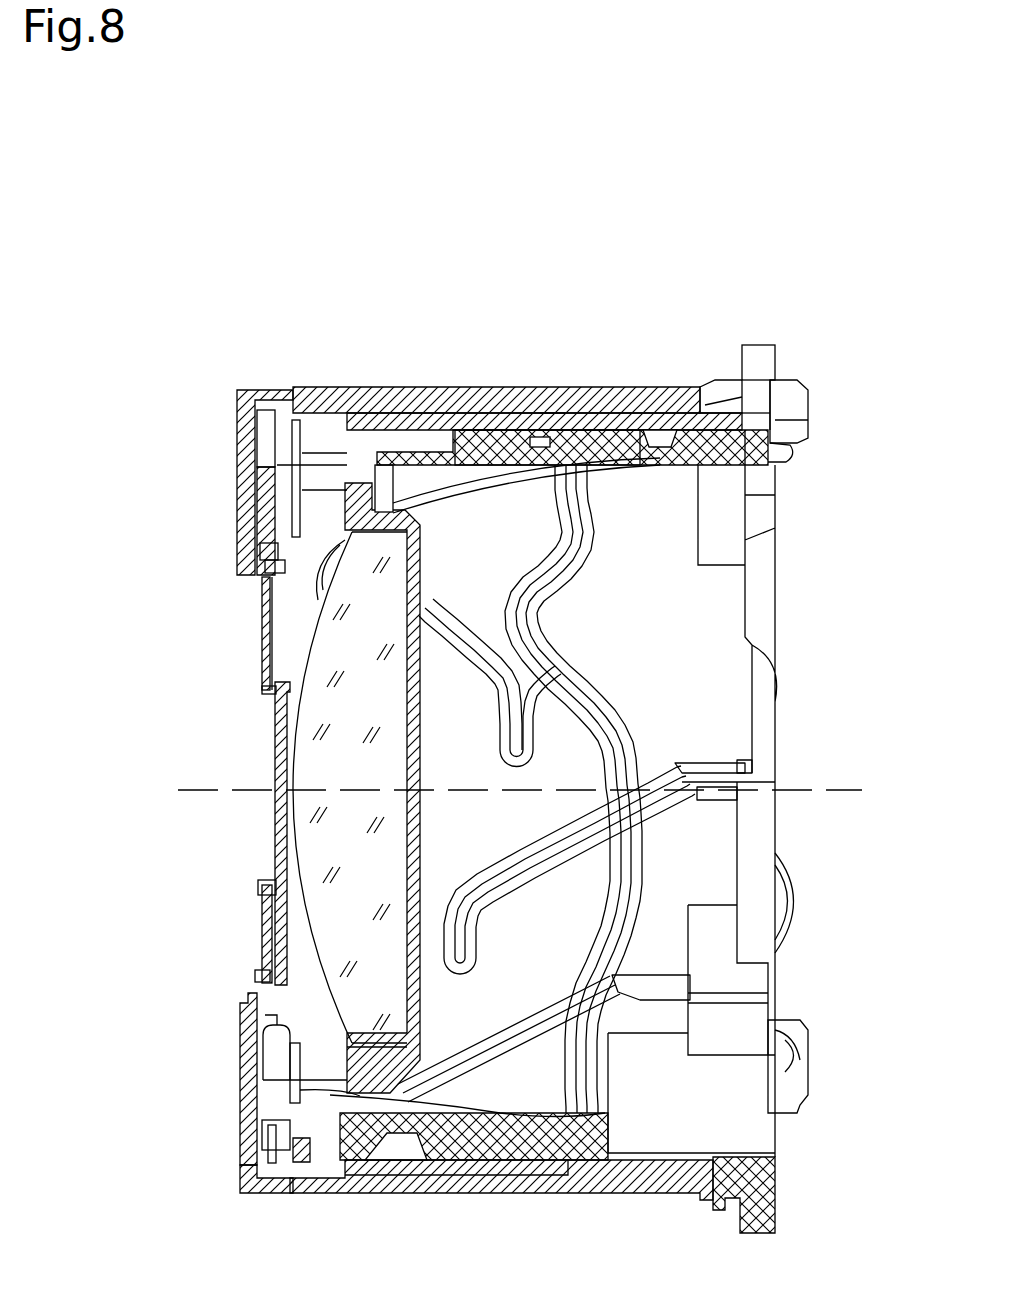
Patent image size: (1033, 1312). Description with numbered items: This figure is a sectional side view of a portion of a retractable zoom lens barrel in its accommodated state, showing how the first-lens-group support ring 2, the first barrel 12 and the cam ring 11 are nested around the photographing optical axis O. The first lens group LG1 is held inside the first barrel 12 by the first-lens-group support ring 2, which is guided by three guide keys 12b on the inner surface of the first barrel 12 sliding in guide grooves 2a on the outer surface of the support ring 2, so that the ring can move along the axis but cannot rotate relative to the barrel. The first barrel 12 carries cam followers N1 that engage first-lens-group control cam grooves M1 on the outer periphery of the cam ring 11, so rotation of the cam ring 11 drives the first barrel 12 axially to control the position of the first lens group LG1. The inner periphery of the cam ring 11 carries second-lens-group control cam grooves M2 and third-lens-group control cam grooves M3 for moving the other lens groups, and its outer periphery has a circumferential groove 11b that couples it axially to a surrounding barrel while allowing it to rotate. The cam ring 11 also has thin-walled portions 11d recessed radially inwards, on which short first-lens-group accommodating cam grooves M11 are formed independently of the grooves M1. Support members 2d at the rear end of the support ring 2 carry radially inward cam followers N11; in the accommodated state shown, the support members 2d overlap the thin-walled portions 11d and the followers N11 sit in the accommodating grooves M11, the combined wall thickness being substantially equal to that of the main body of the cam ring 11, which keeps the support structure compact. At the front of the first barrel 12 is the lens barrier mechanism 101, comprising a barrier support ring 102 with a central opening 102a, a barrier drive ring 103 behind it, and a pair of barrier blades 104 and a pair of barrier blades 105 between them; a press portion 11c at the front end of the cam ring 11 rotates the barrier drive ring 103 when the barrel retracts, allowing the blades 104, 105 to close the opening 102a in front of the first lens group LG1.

The lens barrier mechanism 101 is at (235, 597).
The barrier support ring 102 is at (243, 1030).
The opening 102a is at (255, 974).
The barrier drive ring 103 is at (280, 465).
The barrier blades 104 is at (277, 818).
The barrier blades 105 is at (263, 640).
The first lens group LG1 is at (318, 835).
The photographing optical axis O is at (207, 790).
The first-lens-group support ring 2 is at (433, 420).
The guide grooves 2a is at (478, 1178).
The support members 2d is at (553, 415).
The cam ring 11 is at (722, 420).
The circumferential groove 11b is at (733, 1198).
The press portion 11c is at (305, 457).
The thin-walled portions 11d is at (477, 430).
The first barrel 12 is at (386, 397).
The guide keys 12b is at (547, 1173).
The first-lens-group control cam grooves M1 is at (653, 422).
The second-lens-group control cam grooves M2 is at (615, 470).
The third-lens-group control cam grooves M3 is at (468, 470).
The first-lens-group accommodating cam grooves M11 is at (535, 445).
The cam followers N1 is at (785, 448).
The cam followers N11 is at (528, 470).